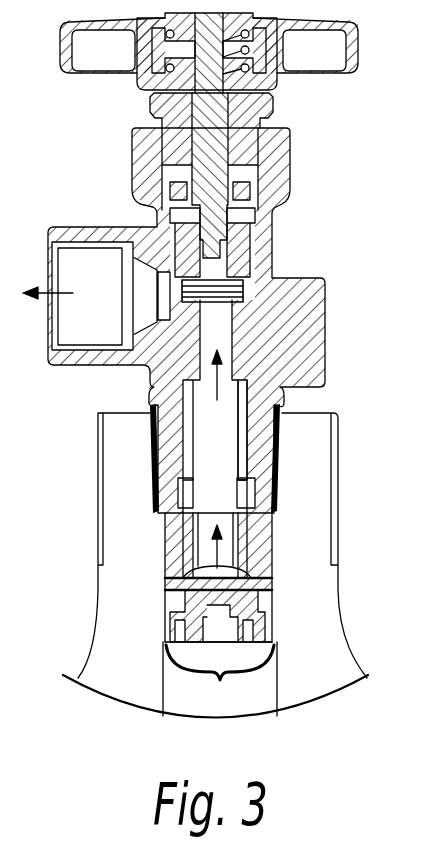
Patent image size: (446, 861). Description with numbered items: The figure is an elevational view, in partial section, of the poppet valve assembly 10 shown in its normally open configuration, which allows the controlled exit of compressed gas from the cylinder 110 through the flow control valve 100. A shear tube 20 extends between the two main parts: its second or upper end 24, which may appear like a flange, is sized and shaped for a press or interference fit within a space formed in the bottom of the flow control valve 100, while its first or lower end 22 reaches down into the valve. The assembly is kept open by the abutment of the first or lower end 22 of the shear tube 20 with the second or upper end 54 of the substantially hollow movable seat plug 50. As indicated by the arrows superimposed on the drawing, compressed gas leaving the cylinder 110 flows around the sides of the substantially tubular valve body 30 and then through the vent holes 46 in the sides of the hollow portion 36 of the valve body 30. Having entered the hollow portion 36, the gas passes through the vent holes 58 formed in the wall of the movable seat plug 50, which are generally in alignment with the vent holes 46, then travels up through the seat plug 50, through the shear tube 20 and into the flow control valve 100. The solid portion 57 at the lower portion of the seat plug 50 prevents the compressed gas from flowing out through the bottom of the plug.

The poppet valve assembly 10 is at (254, 580).
The shear tube 20 is at (275, 401).
The first or lower end of the shear tube 22 is at (257, 492).
The second or upper end of the shear tube 24 is at (190, 389).
The substantially tubular valve body 30 is at (267, 542).
The hollow portion of the substantially tubular valve body 36 is at (170, 542).
The vent holes 46 is at (178, 578).
The substantially hollow movable seat plug 50 is at (190, 527).
The second or upper end of the movable seat plug 54 is at (243, 514).
The solid portion 57 is at (262, 606).
The vent holes 58 is at (184, 607).
The flow control valve 100 is at (290, 162).
The cylinder 110 is at (330, 648).